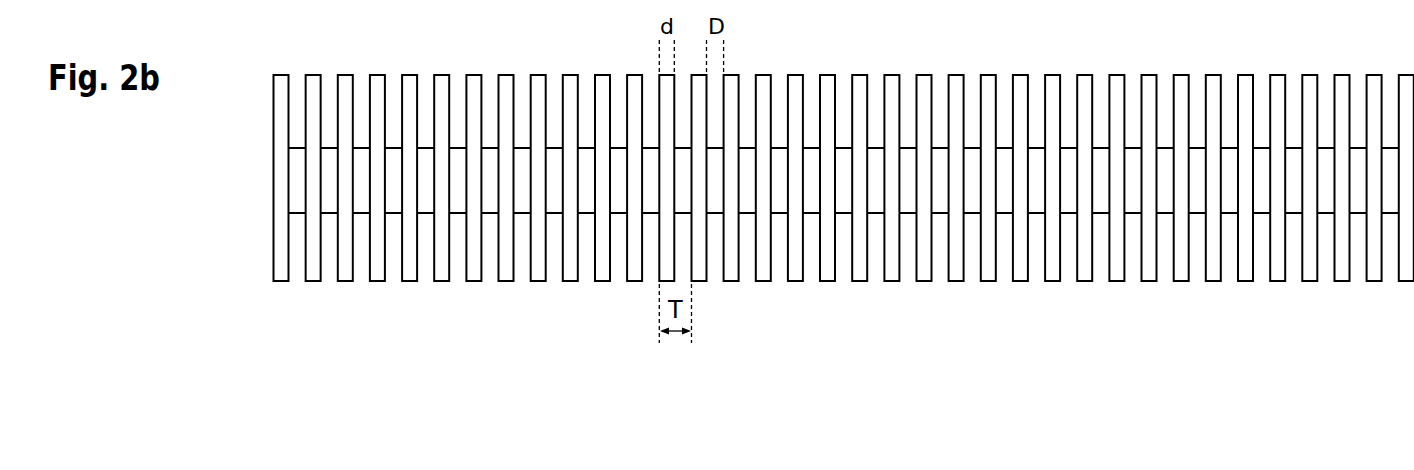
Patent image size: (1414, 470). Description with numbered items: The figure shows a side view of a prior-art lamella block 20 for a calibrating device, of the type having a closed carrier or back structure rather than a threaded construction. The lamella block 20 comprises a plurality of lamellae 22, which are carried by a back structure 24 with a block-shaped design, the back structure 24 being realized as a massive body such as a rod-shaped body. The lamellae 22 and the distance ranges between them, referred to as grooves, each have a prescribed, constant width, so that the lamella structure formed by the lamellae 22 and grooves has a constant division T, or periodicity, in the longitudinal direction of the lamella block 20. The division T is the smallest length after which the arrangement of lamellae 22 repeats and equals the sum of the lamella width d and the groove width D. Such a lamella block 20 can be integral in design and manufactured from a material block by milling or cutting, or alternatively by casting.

The lamella block 20 is at (1322, 182).
The lamellae 22 is at (312, 262).
The back structure 24 is at (426, 183).